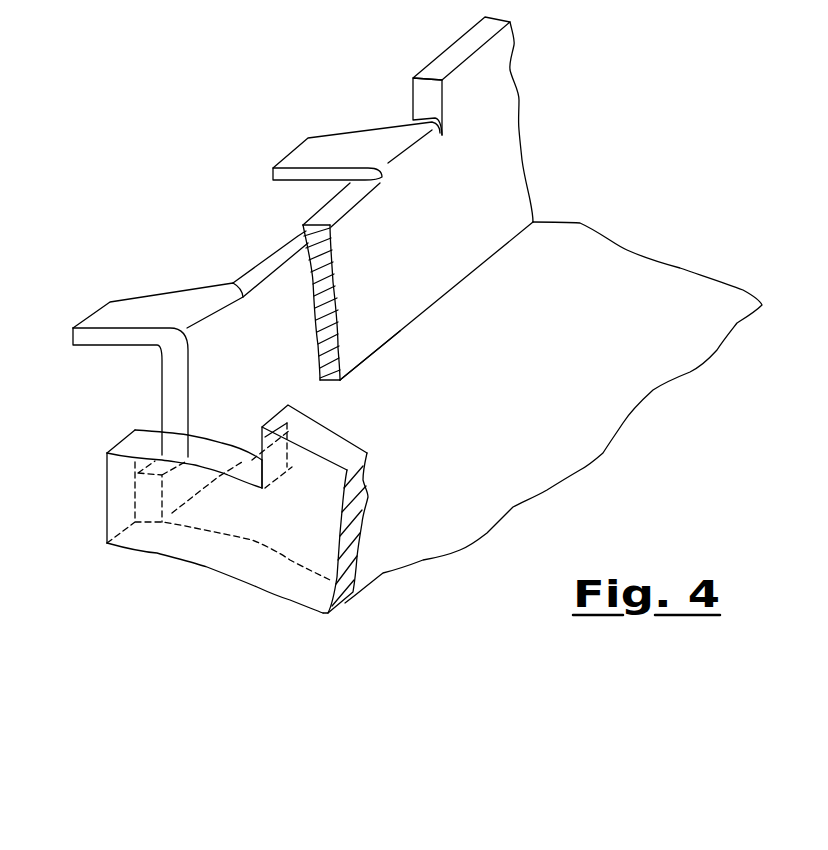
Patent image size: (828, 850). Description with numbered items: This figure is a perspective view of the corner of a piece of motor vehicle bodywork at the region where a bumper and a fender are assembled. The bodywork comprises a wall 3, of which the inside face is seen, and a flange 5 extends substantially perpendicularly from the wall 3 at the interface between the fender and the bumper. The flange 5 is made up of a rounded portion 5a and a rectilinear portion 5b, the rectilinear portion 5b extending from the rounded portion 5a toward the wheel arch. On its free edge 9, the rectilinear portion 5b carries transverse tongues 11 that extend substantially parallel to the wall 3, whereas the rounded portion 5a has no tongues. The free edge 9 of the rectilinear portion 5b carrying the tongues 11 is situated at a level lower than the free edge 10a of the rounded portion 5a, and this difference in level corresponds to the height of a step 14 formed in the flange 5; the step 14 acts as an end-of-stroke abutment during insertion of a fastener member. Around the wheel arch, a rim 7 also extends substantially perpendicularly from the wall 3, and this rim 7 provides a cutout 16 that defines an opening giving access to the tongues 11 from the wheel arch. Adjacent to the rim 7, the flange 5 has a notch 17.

The wall 3 is at (667, 300).
The flange 5 is at (540, 119).
The rounded portion 5a is at (498, 150).
The rectilinear portion 5b is at (457, 243).
The rim 7 is at (247, 527).
The free edge 9 is at (343, 202).
The free edge of rounded portion 10a is at (460, 47).
The transverse tongue 11 is at (327, 150).
The step 14 is at (430, 98).
The cutout 16 is at (237, 463).
The notch 17 is at (175, 383).